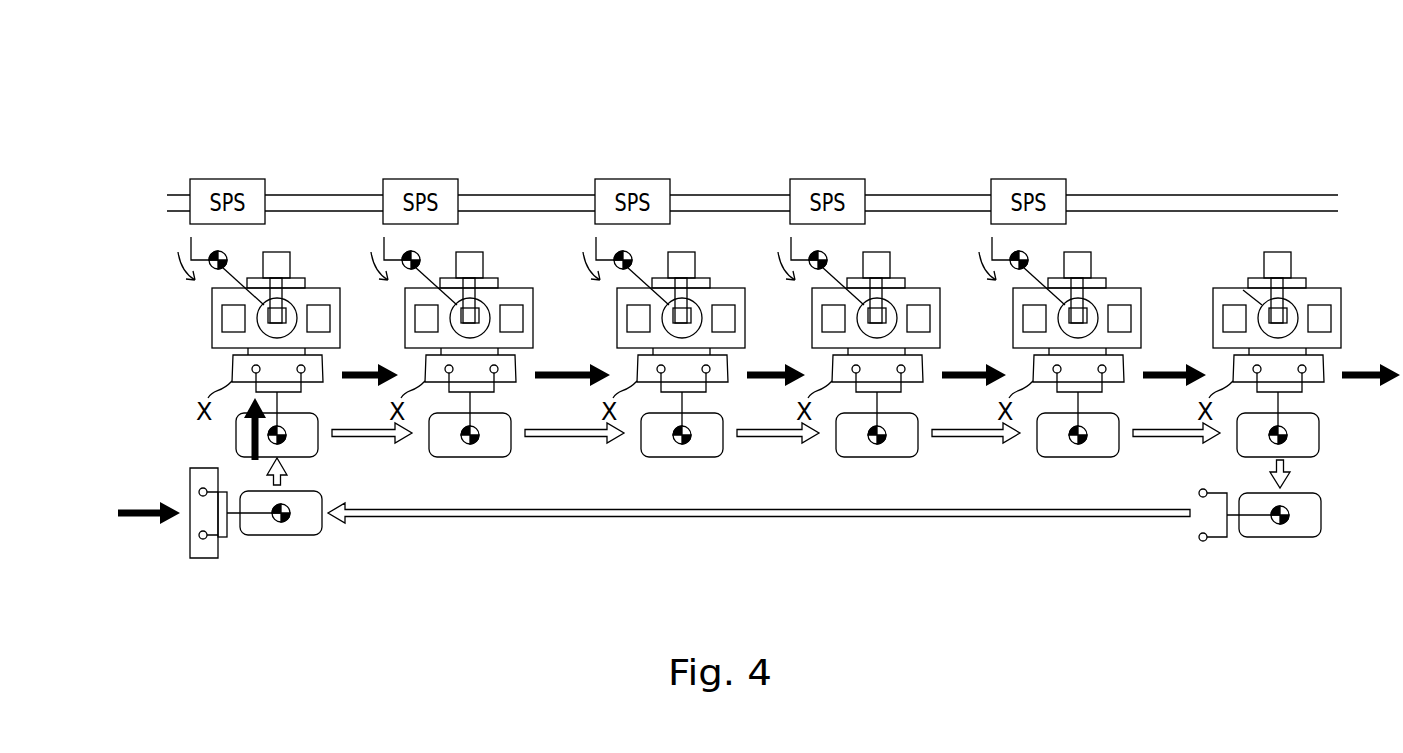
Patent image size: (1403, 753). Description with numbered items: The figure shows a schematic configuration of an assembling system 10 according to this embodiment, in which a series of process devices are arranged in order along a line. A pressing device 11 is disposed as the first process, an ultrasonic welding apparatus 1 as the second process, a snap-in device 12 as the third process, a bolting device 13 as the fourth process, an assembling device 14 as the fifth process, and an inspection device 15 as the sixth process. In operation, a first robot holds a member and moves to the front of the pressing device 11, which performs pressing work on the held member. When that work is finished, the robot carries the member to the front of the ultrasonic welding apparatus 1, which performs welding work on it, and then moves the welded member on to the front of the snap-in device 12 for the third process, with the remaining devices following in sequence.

The manufacturing system 10 is at (1168, 90).
The pressing device 11 is at (290, 253).
The ultrasonic welding apparatus 1 is at (483, 253).
The snap-in device 12 is at (693, 253).
The bolting device 13 is at (888, 253).
The assembling device 14 is at (1089, 253).
The inspection device 15 is at (1290, 253).